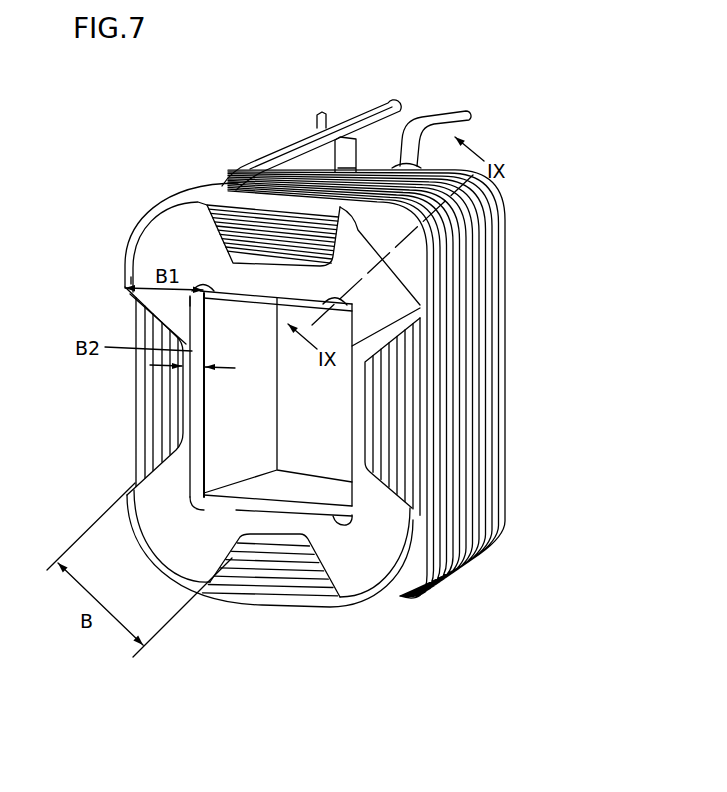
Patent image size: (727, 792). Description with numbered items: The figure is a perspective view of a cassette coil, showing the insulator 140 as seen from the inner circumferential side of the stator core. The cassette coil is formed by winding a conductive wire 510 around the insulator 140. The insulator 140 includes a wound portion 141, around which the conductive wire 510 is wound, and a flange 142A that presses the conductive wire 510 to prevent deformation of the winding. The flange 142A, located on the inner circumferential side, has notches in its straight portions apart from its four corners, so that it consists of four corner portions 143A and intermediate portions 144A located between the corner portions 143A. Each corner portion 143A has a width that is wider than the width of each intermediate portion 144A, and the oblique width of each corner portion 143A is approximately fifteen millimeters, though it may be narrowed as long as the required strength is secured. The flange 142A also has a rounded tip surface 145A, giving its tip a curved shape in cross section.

The insulator 140 is at (318, 371).
The wound portion 141 is at (481, 576).
The flange 142A is at (317, 371).
The corner portions 143A is at (194, 577).
The intermediate portions 144A is at (272, 288).
The rounded tip surface 145A is at (413, 263).
The conductive wire 510 is at (462, 407).